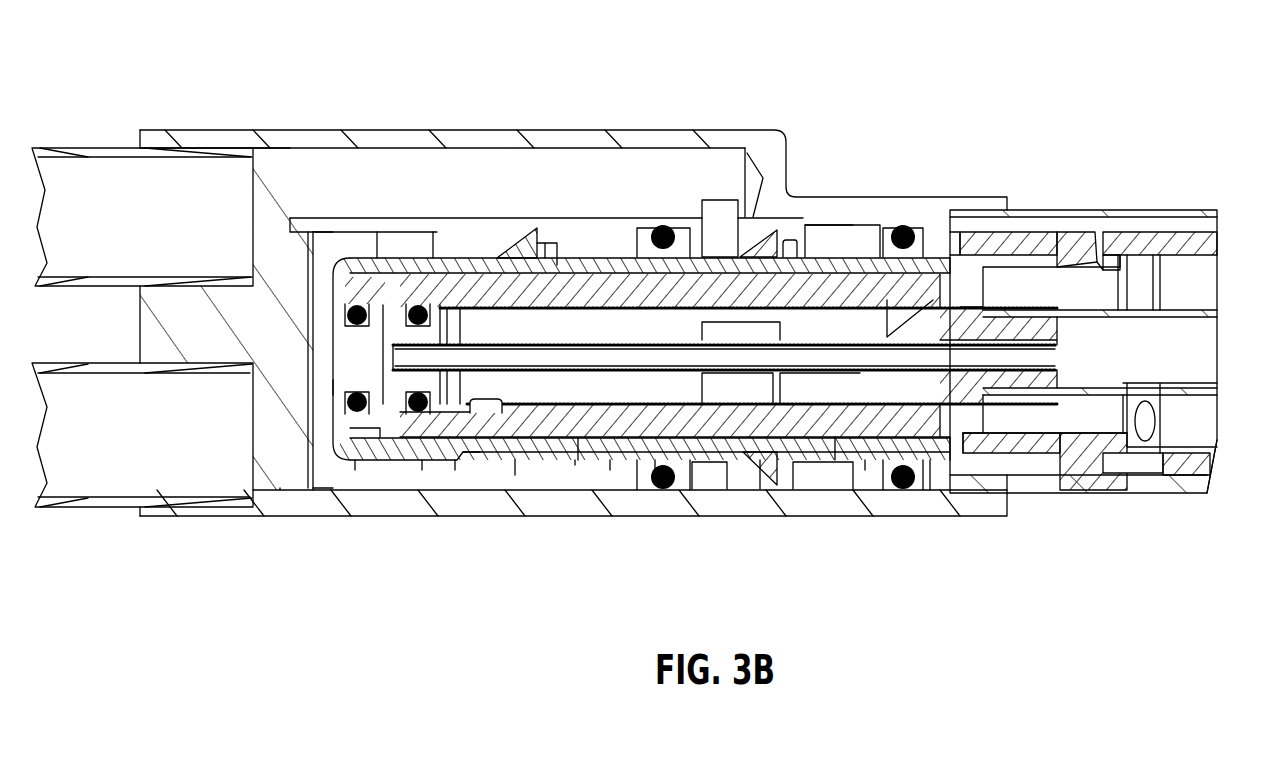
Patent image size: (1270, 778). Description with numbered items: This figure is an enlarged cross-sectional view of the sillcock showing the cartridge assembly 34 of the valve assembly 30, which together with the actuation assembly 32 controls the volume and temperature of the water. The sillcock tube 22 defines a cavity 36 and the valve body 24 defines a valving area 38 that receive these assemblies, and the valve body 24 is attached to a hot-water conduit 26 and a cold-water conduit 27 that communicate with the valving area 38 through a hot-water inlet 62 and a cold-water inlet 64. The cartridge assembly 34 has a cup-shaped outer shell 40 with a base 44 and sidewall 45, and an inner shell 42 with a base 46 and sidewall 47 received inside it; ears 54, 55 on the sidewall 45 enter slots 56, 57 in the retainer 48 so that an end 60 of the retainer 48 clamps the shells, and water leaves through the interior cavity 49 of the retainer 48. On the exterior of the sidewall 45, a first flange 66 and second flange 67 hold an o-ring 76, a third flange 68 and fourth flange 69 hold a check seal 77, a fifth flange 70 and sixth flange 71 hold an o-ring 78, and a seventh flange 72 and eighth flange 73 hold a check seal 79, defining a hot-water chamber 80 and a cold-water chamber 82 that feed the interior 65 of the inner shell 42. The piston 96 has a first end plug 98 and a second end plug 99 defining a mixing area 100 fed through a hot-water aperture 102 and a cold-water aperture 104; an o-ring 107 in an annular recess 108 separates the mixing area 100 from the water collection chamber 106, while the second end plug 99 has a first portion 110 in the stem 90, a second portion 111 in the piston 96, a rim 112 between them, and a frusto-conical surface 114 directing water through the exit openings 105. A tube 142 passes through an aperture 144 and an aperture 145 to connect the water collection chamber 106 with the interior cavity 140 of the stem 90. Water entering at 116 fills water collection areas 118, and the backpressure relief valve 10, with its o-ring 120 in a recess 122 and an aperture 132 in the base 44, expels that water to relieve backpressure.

The backpressure relief valve 10 is at (291, 492).
The sillcock tube 22 is at (1115, 213).
The valve body 24 is at (340, 495).
The hot-water conduit 26 is at (87, 148).
The cold-water conduit 27 is at (72, 505).
The valve assembly 30 is at (988, 278).
The actuation assembly 32 is at (1173, 293).
The cartridge assembly 34 is at (365, 484).
The cavity 36 is at (1068, 232).
The valving area 38 is at (330, 490).
The outer shell 40 is at (340, 240).
The inner shell 42 is at (415, 300).
The base 44 is at (287, 217).
The sidewall 45 is at (380, 240).
The base 46 is at (402, 440).
The sidewall 47 is at (530, 235).
The retainer 48 is at (1202, 492).
The interior cavity 49 is at (1180, 418).
The ear 54 is at (1050, 232).
The ear 55 is at (1077, 463).
The slot 56 is at (1093, 232).
The slot 57 is at (1103, 477).
The end 60 is at (960, 232).
The hot-water inlet 62 is at (725, 195).
The cold-water inlet 64 is at (280, 490).
The interior 65 is at (487, 427).
The first flange 66 is at (930, 470).
The second flange 67 is at (865, 465).
The third flange 68 is at (790, 489).
The fourth flange 69 is at (742, 485).
The fifth flange 70 is at (682, 489).
The sixth flange 71 is at (655, 470).
The seventh flange 72 is at (575, 465).
The eighth flange 73 is at (468, 445).
The o-ring 76 is at (900, 489).
The check seal 77 is at (760, 489).
The o-ring 78 is at (665, 489).
The check seal 79 is at (515, 475).
The hot-water chamber 80 is at (858, 250).
The cold-water chamber 82 is at (610, 462).
The stem 90 is at (1163, 477).
The piston 96 is at (670, 323).
The first end plug 98 is at (478, 306).
The second end plug 99 is at (1018, 305).
The mixing area 100 is at (723, 207).
The hot-water aperture 102 is at (777, 325).
The cold-water aperture 104 is at (578, 455).
The exit openings 105 is at (876, 232).
The water collection chamber 106 is at (365, 358).
The o-ring 107 is at (433, 300).
The annular recess 108 is at (466, 318).
The first portion 110 is at (1037, 397).
The second portion 111 is at (905, 380).
The rim 112 is at (972, 398).
The frusto-conical surface 114 is at (885, 315).
The entry point 116 is at (1058, 330).
The water collection areas 118 is at (422, 470).
The o-ring 120 is at (308, 300).
The recess 122 is at (335, 414).
The aperture 132 is at (338, 387).
The interior cavity 140 is at (1170, 338).
The tube 142 is at (440, 465).
The aperture 144 is at (470, 362).
The aperture 145 is at (1060, 373).